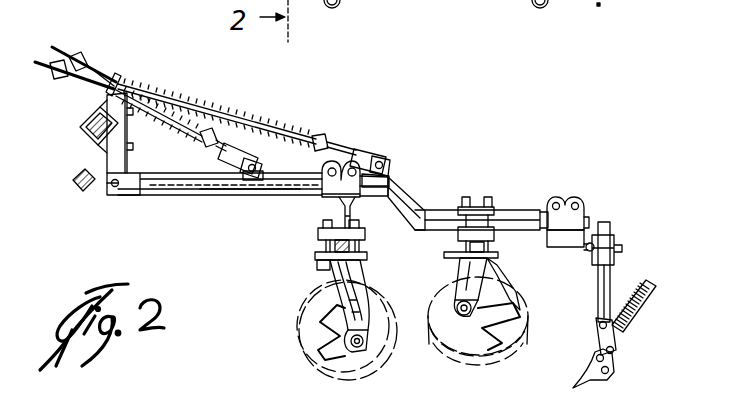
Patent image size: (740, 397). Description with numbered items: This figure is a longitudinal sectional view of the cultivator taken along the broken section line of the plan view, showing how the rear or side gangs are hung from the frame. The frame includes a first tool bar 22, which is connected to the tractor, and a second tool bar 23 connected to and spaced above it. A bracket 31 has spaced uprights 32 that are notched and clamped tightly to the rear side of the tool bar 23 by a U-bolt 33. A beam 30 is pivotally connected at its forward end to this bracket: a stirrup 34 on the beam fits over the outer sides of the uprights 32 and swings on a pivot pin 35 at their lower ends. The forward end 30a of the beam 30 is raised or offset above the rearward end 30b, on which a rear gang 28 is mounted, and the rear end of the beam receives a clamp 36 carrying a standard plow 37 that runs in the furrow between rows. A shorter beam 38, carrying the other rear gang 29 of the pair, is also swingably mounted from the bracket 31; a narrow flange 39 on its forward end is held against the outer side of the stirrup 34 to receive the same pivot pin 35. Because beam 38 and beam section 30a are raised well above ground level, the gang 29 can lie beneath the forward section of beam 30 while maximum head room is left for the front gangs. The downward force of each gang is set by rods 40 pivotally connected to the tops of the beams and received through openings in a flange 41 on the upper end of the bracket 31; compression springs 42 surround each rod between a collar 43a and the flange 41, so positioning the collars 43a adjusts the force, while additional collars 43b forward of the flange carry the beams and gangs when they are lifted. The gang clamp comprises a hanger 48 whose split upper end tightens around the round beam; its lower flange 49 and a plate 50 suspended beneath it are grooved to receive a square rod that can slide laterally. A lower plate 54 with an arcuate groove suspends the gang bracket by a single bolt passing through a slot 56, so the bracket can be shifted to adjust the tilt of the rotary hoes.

The first tool bar 22 is at (72, 180).
The second tool bar 23 is at (90, 132).
The rear gang 28 is at (535, 312).
The rear gang 29 is at (288, 307).
The beam 30 is at (505, 208).
The forward end of the beam 30a is at (179, 198).
The rearward end of the beam 30b is at (520, 231).
The bracket 31 is at (134, 141).
The uprights 32 is at (104, 160).
The U-bolt 33 is at (100, 122).
The stirrup 34 is at (134, 200).
The pivot pin 35 is at (114, 198).
The clamp 36 is at (590, 205).
The standard plow 37 is at (618, 366).
The beam 38 is at (233, 198).
The flange 39 is at (134, 177).
The rods 40 is at (357, 151).
The flange 41 is at (118, 73).
The compression springs 42 is at (200, 108).
The collar 43a is at (214, 130).
The additional collars 43b is at (77, 62).
The hanger 48 is at (338, 214).
The flange 49 is at (366, 237).
The plate 50 is at (318, 255).
The plate 54 is at (314, 258).
The slot 56 is at (360, 290).